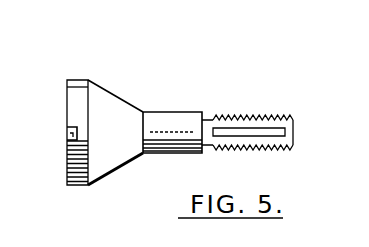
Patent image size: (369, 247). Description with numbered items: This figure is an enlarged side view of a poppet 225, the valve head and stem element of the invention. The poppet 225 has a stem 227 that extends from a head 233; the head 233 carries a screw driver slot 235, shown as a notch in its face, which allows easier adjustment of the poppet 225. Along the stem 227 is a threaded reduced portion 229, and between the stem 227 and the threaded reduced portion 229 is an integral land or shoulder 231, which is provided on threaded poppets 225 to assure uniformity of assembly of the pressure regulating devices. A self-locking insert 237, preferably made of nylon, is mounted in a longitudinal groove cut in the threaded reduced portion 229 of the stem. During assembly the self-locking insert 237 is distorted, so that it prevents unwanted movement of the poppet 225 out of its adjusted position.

The poppet 225 is at (174, 112).
The stem 227 is at (168, 124).
The threaded reduced portion 229 is at (250, 118).
The land or shoulder 231 is at (203, 148).
The head 233 is at (70, 185).
The screw driver slot 235 is at (71, 131).
The self-locking insert 237 is at (270, 136).